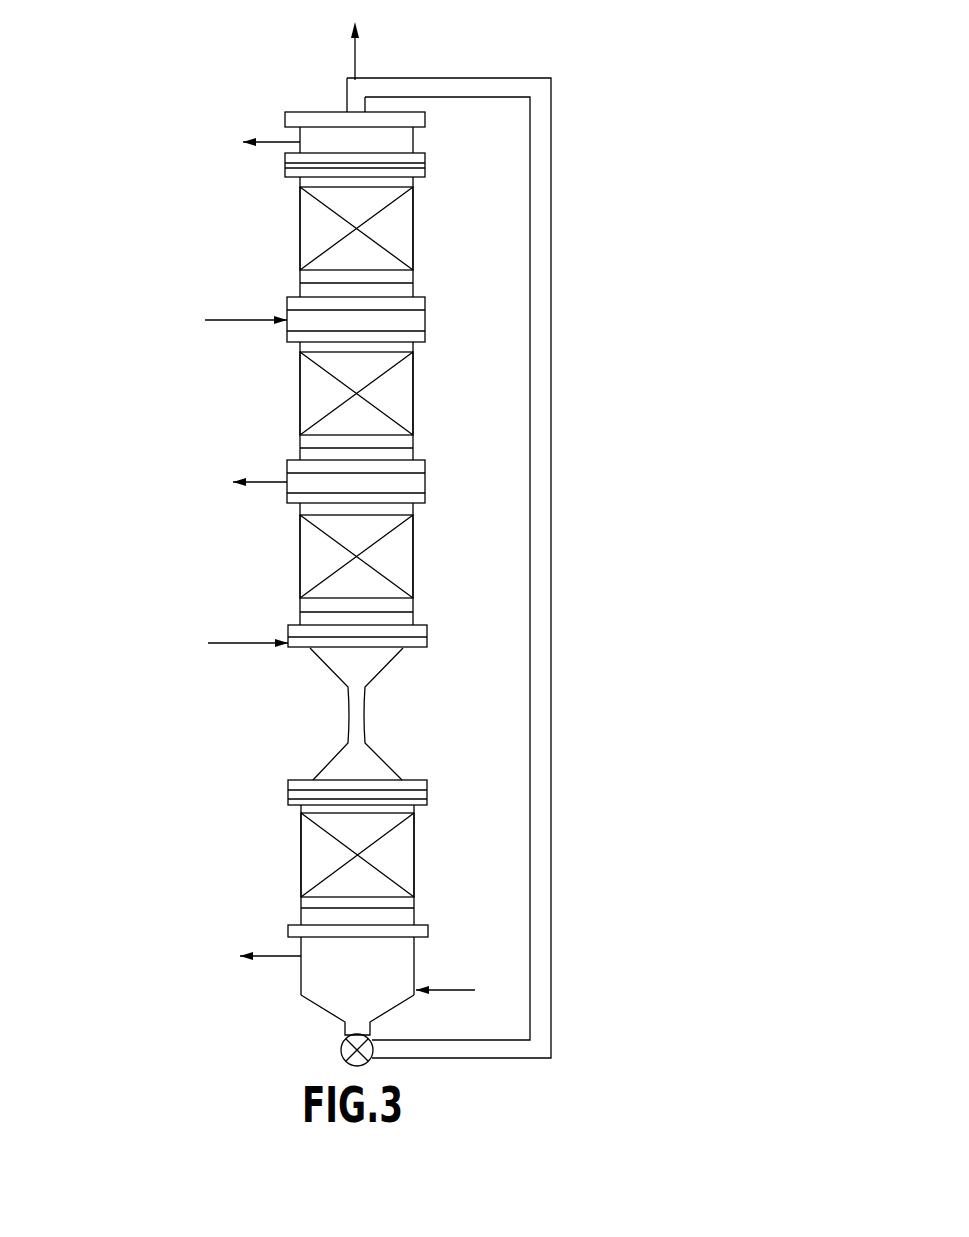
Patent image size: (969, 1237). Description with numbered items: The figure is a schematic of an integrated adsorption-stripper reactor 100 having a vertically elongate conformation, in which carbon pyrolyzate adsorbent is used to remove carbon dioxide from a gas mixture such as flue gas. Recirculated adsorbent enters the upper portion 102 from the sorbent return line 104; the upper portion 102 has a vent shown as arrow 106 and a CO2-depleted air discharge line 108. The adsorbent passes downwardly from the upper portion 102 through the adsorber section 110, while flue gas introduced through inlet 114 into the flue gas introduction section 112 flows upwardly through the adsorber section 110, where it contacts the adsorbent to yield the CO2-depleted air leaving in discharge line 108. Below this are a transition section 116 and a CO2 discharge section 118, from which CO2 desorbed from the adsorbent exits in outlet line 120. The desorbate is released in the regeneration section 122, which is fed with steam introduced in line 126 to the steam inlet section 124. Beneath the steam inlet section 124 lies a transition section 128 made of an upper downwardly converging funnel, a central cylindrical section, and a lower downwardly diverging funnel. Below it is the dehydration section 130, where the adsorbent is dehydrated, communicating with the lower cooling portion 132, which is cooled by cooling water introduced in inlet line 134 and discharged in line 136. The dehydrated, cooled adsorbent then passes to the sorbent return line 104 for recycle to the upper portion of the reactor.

The adsorption-stripper reactor 100 is at (606, 36).
The upper portion 102 is at (405, 143).
The sorbent return line 104 is at (455, 79).
The vent 106 is at (353, 58).
The CO2-depleted air discharge line 108 is at (297, 148).
The adsorber section 110 is at (405, 232).
The flue gas introduction section 112 is at (405, 325).
The inlet 114 is at (216, 318).
The transition section 116 is at (407, 390).
The CO2 discharge section 118 is at (422, 483).
The outlet line 120 is at (275, 485).
The regeneration section 122 is at (407, 567).
The steam inlet section 124 is at (427, 637).
The line 126 is at (228, 627).
The transition section 128 is at (364, 717).
The dehydration section 130 is at (407, 852).
The lower cooling portion 132 is at (330, 1005).
The inlet line 134 is at (452, 991).
The line 136 is at (273, 956).